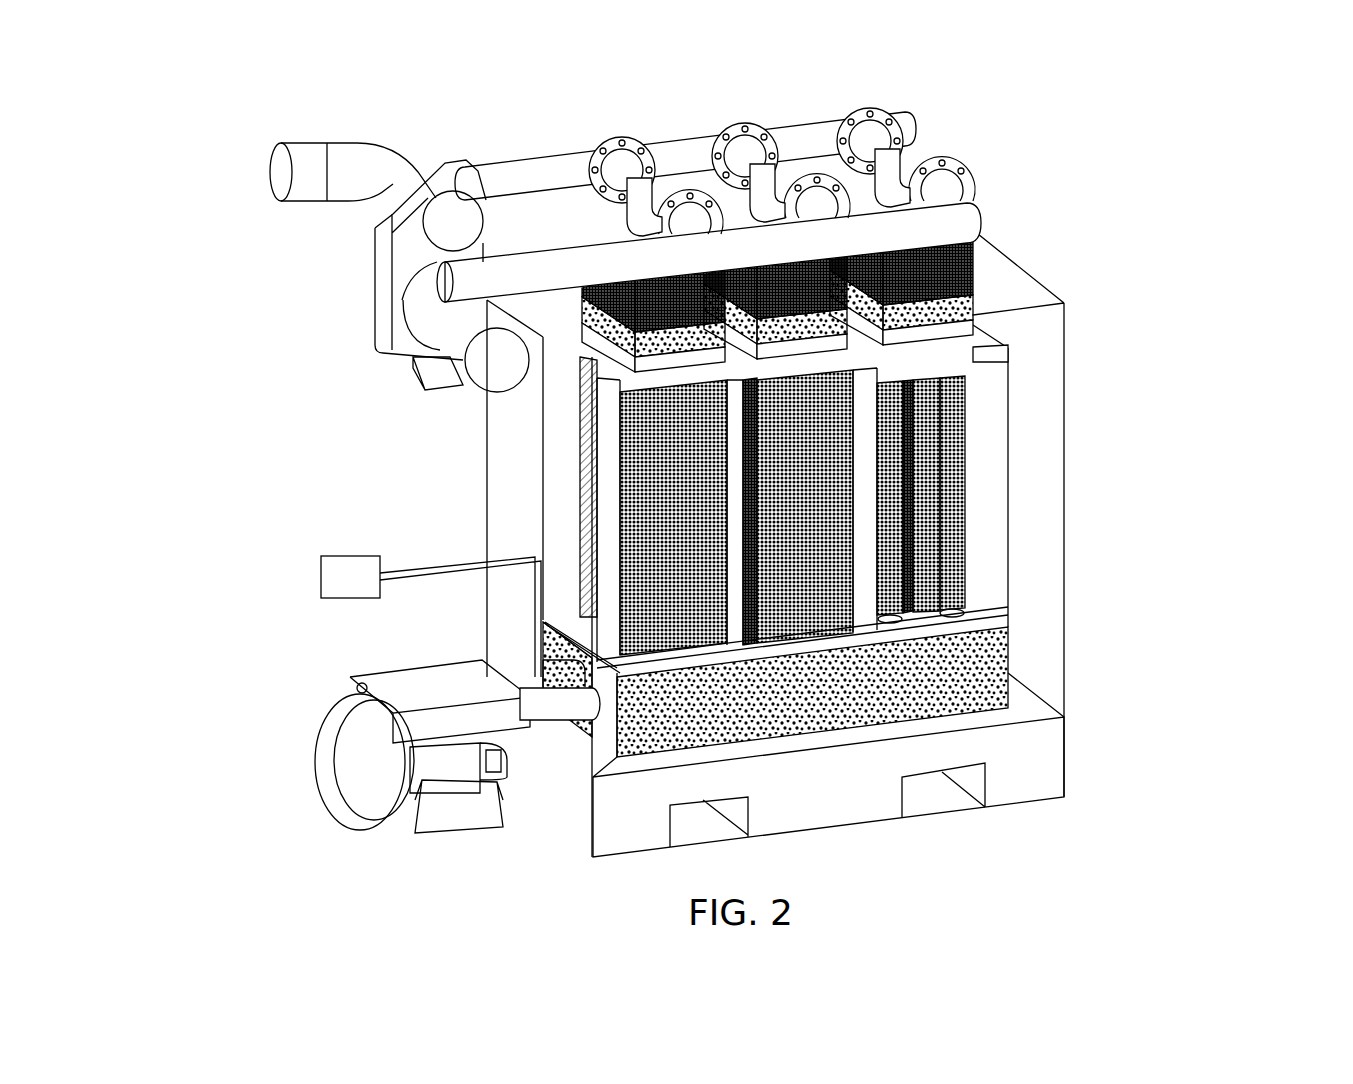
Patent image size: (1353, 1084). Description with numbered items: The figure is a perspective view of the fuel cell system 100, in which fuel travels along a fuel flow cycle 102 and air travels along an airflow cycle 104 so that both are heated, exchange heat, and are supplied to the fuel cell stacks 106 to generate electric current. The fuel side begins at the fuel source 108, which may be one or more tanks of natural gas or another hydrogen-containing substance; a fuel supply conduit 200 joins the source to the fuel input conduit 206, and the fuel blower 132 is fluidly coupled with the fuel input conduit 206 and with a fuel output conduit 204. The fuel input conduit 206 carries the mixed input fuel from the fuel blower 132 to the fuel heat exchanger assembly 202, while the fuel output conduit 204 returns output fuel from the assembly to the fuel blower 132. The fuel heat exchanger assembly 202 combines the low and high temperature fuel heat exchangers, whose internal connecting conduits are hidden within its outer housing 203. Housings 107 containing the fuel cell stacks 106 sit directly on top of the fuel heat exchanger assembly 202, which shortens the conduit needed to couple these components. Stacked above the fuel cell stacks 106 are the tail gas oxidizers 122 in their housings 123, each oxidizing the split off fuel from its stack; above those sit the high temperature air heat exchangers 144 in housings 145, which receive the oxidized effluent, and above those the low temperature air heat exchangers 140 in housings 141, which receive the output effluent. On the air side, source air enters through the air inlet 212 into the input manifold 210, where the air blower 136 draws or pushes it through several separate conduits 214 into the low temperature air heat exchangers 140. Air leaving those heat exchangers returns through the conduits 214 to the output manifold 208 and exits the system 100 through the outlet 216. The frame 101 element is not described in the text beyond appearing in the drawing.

The fuel cell system 100 is at (200, 98).
The frame 101 is at (487, 452).
The fuel flow cycle 102 is at (1228, 398).
The airflow cycle 104 is at (1165, 75).
The fuel cell stacks 106 is at (683, 547).
The housings 107 is at (575, 478).
The fuel source 108 is at (350, 577).
The tail gas oxidizers 122 is at (893, 383).
The housings 123 is at (580, 342).
The fuel blower 132 is at (415, 668).
The air blower 136 is at (383, 268).
The low temperature air heat exchangers 140 is at (918, 275).
The housings 141 is at (977, 240).
The high temperature air heat exchangers 144 is at (978, 303).
The housings 145 is at (925, 313).
The fuel supply conduit 200 is at (450, 556).
The fuel heat exchanger assembly 202 is at (860, 703).
The outer housing 203 is at (717, 723).
The fuel output conduit 204 is at (517, 678).
The fuel input conduit 206 is at (545, 722).
The output manifold 208 is at (540, 262).
The input manifold 210 is at (685, 145).
The air inlet 212 is at (280, 180).
The conduits 214 is at (628, 185).
The outlet 216 is at (378, 317).